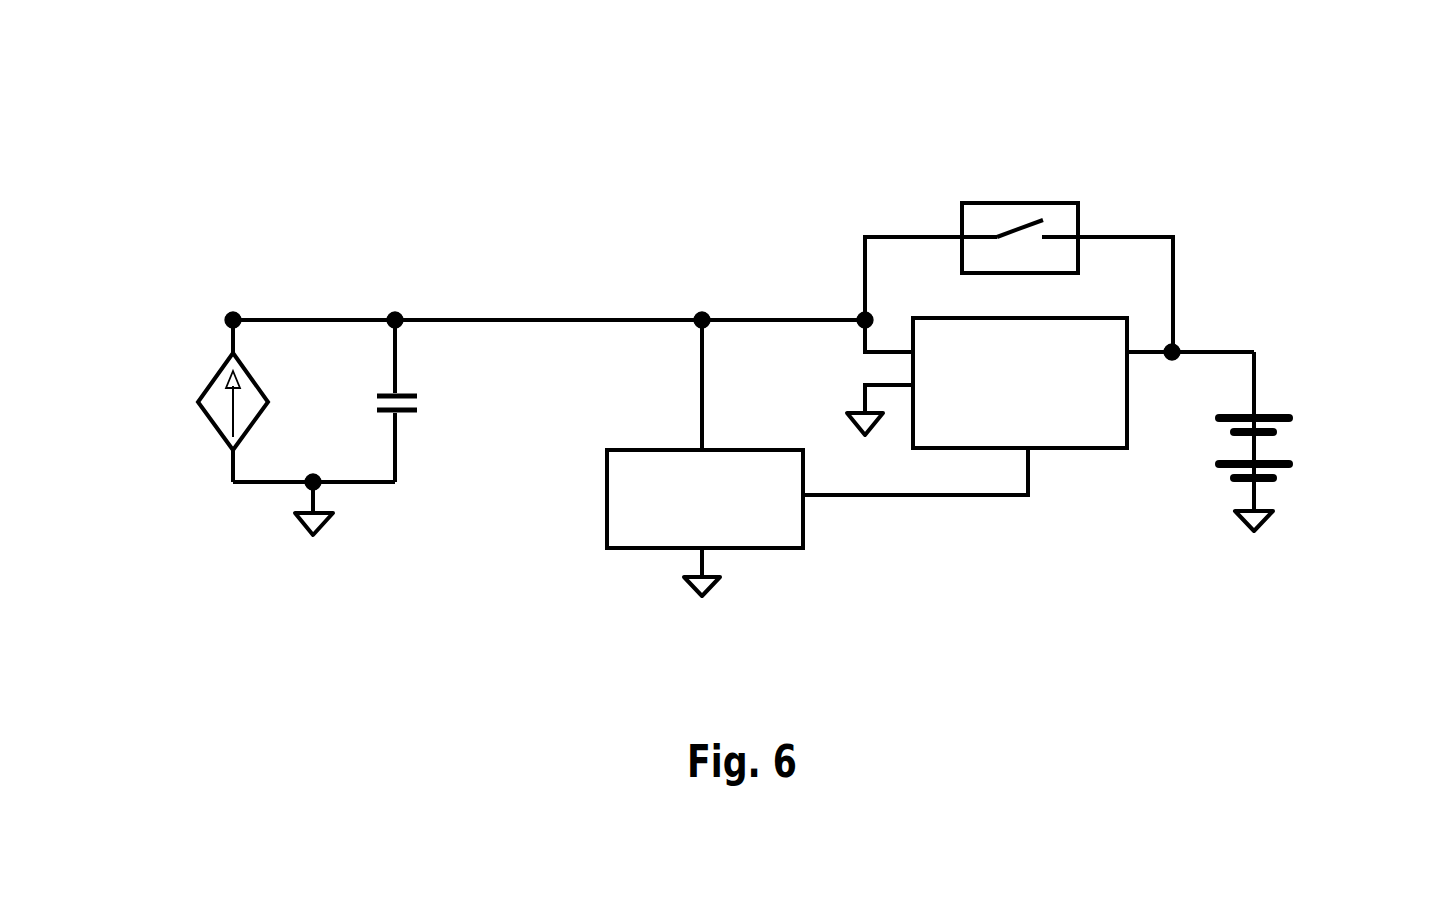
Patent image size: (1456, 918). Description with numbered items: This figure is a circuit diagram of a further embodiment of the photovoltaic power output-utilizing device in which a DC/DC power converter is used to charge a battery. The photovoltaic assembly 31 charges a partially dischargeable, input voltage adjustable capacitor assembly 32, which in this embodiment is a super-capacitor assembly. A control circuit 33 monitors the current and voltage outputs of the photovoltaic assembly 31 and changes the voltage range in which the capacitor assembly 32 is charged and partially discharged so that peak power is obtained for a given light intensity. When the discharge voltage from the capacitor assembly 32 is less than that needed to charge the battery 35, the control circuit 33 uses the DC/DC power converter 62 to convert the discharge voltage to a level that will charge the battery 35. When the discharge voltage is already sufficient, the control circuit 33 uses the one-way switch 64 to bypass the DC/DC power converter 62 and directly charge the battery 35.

The photovoltaic assembly 31 is at (218, 373).
The capacitor assembly 32 is at (412, 383).
The control circuit 33 is at (655, 450).
The DC/DC power converter 62 is at (930, 333).
The one-way switch 64 is at (1080, 212).
The battery 35 is at (1287, 406).